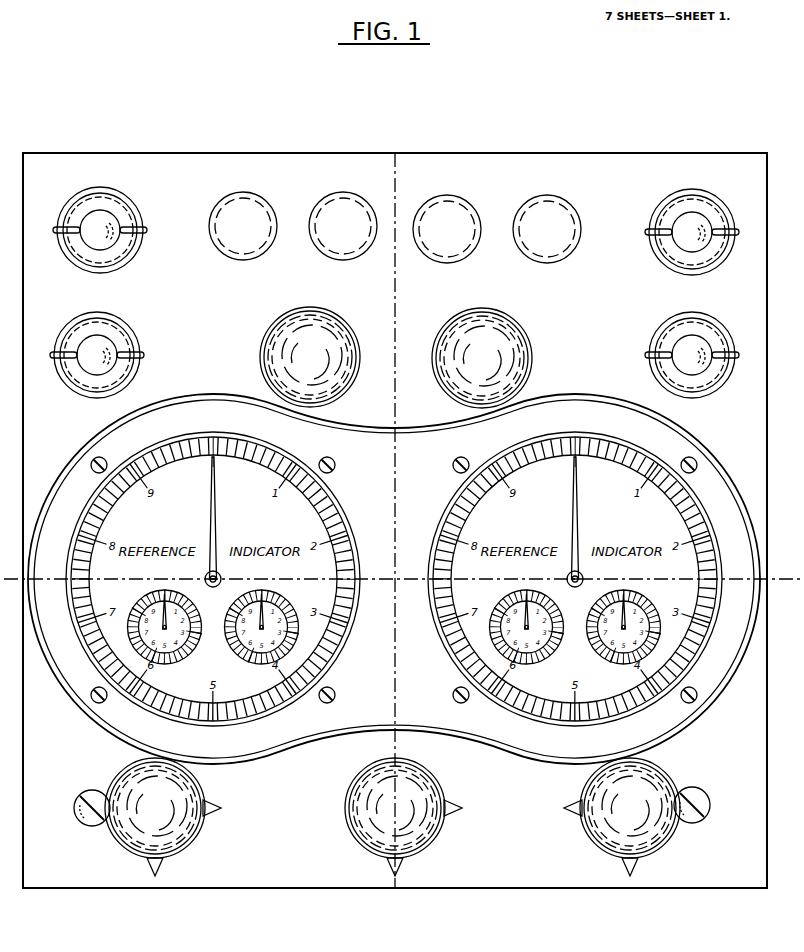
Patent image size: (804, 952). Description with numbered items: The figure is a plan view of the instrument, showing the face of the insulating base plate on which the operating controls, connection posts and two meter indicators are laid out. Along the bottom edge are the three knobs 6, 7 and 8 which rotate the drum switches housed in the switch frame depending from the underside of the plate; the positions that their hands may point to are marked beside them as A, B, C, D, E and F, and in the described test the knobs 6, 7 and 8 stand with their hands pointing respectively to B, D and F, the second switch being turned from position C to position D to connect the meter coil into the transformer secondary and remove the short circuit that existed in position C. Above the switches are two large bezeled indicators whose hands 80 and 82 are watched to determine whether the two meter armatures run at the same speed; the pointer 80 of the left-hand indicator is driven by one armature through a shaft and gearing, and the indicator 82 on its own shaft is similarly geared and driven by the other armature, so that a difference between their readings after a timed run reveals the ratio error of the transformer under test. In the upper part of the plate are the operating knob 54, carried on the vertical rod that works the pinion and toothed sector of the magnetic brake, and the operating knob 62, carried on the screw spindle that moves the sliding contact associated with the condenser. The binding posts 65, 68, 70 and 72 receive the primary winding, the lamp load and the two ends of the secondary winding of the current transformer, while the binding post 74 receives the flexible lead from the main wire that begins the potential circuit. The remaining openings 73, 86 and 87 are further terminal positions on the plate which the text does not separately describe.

The knob 6 is at (139, 808).
The knob 7 is at (395, 808).
The knob 8 is at (645, 808).
The operating knob 54 is at (482, 358).
The operating knob 62 is at (310, 357).
The binding post 65 is at (100, 241).
The binding post 68 is at (97, 366).
The binding post 70 is at (692, 366).
The binding post 72 is at (692, 244).
The opening 73 is at (243, 226).
The binding post 74 is at (343, 226).
The pointer 80 is at (218, 513).
The indicator 82 is at (579, 522).
The opening 86 is at (447, 229).
The opening 87 is at (547, 229).
The switch position A is at (223, 808).
The switch position B is at (155, 876).
The switch position C is at (464, 808).
The switch position D is at (395, 876).
The switch position E is at (630, 876).
The switch position F is at (561, 808).